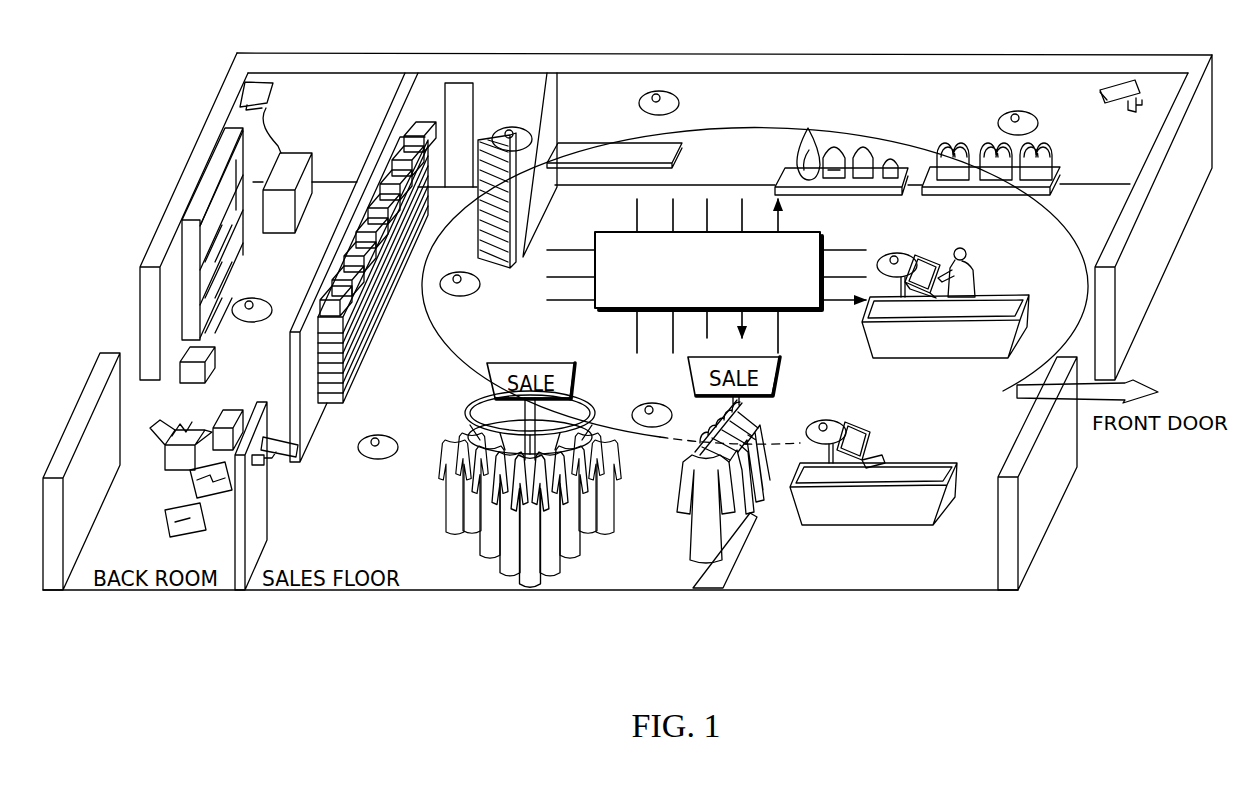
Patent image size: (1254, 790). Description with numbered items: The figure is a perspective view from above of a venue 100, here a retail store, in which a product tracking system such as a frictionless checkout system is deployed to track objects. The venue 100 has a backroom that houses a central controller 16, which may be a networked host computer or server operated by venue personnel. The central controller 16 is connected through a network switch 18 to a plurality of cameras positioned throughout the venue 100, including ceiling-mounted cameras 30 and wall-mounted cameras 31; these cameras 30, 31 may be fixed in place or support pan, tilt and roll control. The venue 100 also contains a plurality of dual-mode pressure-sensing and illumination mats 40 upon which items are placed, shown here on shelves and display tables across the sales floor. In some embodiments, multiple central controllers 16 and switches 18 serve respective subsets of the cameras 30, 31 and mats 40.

The venue 100 is at (178, 45).
The central controller 16 is at (297, 162).
The network switch 18 is at (272, 97).
The ceiling-mounted cameras 30 is at (512, 127).
The wall-mounted cameras 31 is at (1108, 106).
The dual-mode pressure-sensing and illumination mats 40 is at (357, 230).